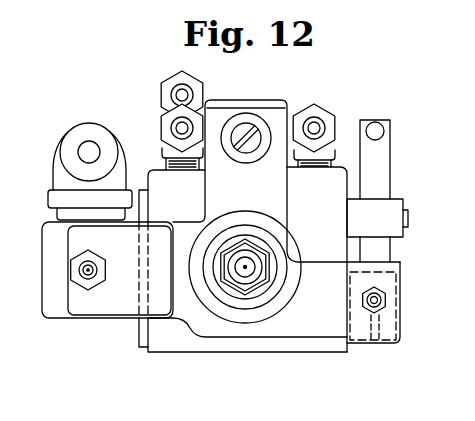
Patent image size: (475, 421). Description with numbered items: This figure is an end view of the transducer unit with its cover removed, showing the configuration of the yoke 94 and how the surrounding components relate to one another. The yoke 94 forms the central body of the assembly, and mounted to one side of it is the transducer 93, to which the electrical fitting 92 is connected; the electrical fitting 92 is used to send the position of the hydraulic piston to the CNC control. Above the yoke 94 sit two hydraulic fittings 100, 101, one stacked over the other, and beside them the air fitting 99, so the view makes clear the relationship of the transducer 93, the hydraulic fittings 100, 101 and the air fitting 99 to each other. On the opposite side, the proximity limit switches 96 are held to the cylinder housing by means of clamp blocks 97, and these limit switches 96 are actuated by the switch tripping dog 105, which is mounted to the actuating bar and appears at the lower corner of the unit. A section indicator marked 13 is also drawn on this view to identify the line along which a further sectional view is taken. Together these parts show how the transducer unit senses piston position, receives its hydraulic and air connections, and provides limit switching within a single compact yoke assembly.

The section line 13- 13 is at (248, 97).
The electrical fitting 92 is at (85, 128).
The transducer 93 is at (60, 305).
The yoke 94 is at (312, 272).
The proximity limit switches 96 is at (382, 163).
The clamp blocks 97 is at (400, 200).
The air fitting 99 is at (315, 110).
The hydraulic fitting 100 is at (172, 77).
The hydraulic fitting 101 is at (168, 113).
The switch tripping dog 105 is at (402, 342).